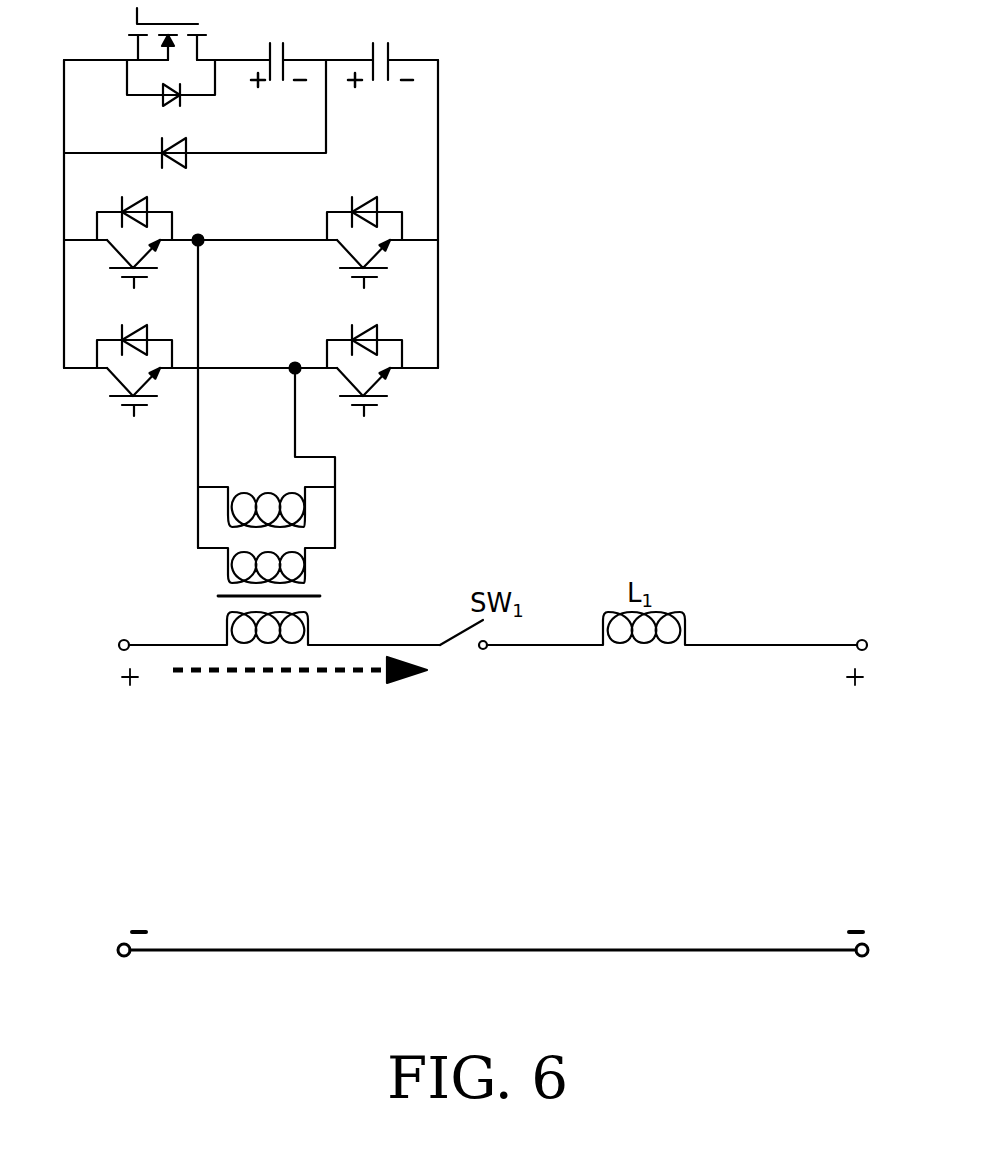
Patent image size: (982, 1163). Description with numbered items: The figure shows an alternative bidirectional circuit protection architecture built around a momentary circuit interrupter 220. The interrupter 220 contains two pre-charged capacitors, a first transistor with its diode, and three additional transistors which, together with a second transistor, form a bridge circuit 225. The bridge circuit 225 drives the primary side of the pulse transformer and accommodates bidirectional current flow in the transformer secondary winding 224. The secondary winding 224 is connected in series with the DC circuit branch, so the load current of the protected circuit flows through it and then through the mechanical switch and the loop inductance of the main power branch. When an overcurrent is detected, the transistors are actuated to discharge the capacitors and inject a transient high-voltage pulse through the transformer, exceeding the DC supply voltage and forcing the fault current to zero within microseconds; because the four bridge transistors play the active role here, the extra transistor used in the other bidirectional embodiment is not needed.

The bidirectional momentary circuit interrupter 220 is at (505, 186).
The transformer secondary winding 224 is at (308, 632).
The bridge circuit 225 is at (154, 460).